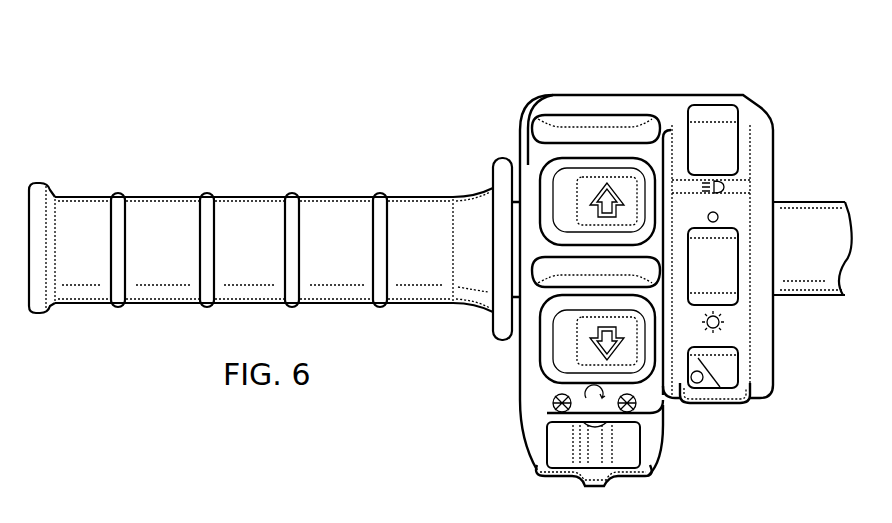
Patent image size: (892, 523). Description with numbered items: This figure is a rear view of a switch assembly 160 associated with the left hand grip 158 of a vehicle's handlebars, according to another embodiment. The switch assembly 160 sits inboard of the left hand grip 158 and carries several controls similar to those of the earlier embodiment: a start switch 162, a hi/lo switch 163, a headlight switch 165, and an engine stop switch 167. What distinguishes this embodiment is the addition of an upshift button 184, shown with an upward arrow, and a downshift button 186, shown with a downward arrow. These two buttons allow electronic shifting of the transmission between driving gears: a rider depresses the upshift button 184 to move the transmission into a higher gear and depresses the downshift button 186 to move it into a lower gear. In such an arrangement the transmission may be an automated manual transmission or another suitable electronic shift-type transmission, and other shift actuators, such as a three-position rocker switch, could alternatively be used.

The left hand grip 158 is at (250, 196).
The switch assembly 160 is at (665, 68).
The start switch 162 is at (730, 383).
The hi/lo switch 163 is at (722, 142).
The headlight switch 165 is at (722, 256).
The engine stop switch 167 is at (558, 447).
The upshift button 184 is at (591, 185).
The downshift button 186 is at (588, 348).